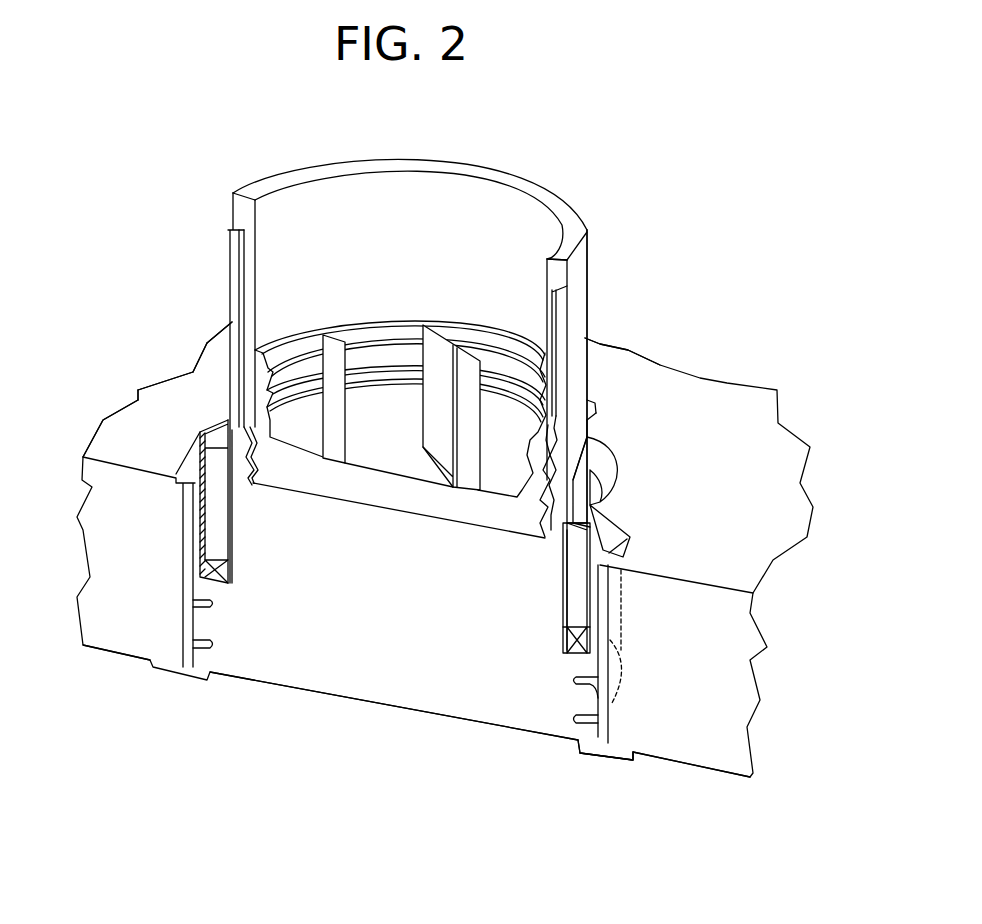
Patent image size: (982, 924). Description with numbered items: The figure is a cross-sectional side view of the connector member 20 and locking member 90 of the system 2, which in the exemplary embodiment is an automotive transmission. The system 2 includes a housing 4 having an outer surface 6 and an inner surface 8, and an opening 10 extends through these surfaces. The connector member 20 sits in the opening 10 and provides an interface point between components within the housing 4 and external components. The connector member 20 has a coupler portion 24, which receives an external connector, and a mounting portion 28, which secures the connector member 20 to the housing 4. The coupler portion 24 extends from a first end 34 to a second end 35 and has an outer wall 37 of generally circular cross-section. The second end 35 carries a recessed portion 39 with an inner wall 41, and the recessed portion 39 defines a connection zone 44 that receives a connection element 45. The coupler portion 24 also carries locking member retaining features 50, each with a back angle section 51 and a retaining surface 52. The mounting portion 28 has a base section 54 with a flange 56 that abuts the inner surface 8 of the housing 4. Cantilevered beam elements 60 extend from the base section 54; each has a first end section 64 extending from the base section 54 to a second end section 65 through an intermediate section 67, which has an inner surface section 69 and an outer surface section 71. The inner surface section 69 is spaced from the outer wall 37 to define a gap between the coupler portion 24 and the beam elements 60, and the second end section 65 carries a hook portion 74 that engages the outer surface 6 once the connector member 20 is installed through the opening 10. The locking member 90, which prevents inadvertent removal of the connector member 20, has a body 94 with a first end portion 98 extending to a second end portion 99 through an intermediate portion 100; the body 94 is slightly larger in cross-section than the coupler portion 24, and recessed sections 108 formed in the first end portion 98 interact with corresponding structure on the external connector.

The system 2 is at (132, 378).
The housing 4 is at (168, 375).
The outer surface 6 is at (208, 395).
The inner surface 8 is at (130, 658).
The opening 10 is at (183, 548).
The connector member 20 is at (696, 351).
The coupler portion 24 is at (604, 327).
The mounting portion 28 is at (654, 682).
The first end 34 is at (623, 650).
The second end 35 is at (588, 293).
The outer wall 37 is at (578, 357).
The recessed portion 39 is at (590, 415).
The inner wall 41 is at (553, 418).
The connection zone 44 is at (509, 230).
The connection element 45 is at (592, 258).
The locking member retaining feature 50 is at (598, 403).
The back angle section 51 is at (590, 397).
The retaining surface 52 is at (595, 433).
The base section 54 is at (557, 697).
The flange 56 is at (622, 748).
The cantilevered beam element 60 is at (628, 607).
The first end section 64 is at (593, 672).
The second end section 65 is at (592, 503).
The intermediate section 67 is at (617, 592).
The inner surface section 69 is at (583, 595).
The outer surface section 71 is at (613, 622).
The hook portion 74 is at (605, 548).
The locking member 90 is at (220, 402).
The body 94 is at (213, 483).
The first end portion 98 is at (220, 418).
The second end portion 99 is at (181, 618).
The intermediate portion 100 is at (213, 563).
The first plurality of recessed sections 108 is at (220, 437).